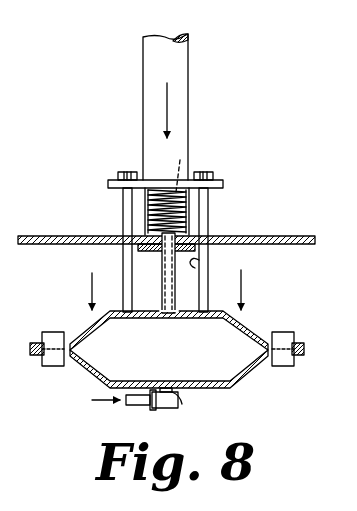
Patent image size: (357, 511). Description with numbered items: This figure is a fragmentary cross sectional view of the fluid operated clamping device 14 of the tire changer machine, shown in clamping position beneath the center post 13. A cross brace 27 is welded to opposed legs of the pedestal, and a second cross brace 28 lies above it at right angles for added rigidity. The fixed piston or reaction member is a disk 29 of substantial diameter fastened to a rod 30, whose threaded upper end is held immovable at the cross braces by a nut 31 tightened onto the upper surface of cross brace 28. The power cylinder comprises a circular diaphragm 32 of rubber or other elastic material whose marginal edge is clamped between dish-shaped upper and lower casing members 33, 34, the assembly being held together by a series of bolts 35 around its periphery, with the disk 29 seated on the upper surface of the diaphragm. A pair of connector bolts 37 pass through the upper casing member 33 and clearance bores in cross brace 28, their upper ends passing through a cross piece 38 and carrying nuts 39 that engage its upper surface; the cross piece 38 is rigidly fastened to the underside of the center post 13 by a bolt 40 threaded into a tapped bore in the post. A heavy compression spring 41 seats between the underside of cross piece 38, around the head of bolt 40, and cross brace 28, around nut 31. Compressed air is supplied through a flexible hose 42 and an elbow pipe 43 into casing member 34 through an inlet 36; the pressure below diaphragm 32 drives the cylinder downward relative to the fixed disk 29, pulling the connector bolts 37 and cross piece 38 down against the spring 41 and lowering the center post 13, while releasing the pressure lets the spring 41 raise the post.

The post 13 is at (178, 66).
The fluid operated clamping device 14 is at (166, 365).
The cross brace 27 is at (200, 261).
The second cross brace 28 is at (295, 234).
The disk 29 is at (192, 318).
The rod 30 is at (162, 270).
The nut 31 is at (196, 223).
The circular diaphragm 32 is at (106, 332).
The upper casing member 33 is at (90, 318).
The lower casing member 34 is at (95, 372).
The bolts 35 is at (48, 332).
The inlet 36 is at (140, 404).
The connector bolts 37 is at (123, 198).
The cross piece 38 is at (224, 182).
The nuts 39 is at (127, 174).
The bolt 40 is at (181, 166).
The compression spring 41 is at (150, 214).
The flexible hose 42 is at (128, 402).
The elbow pipe 43 is at (174, 406).